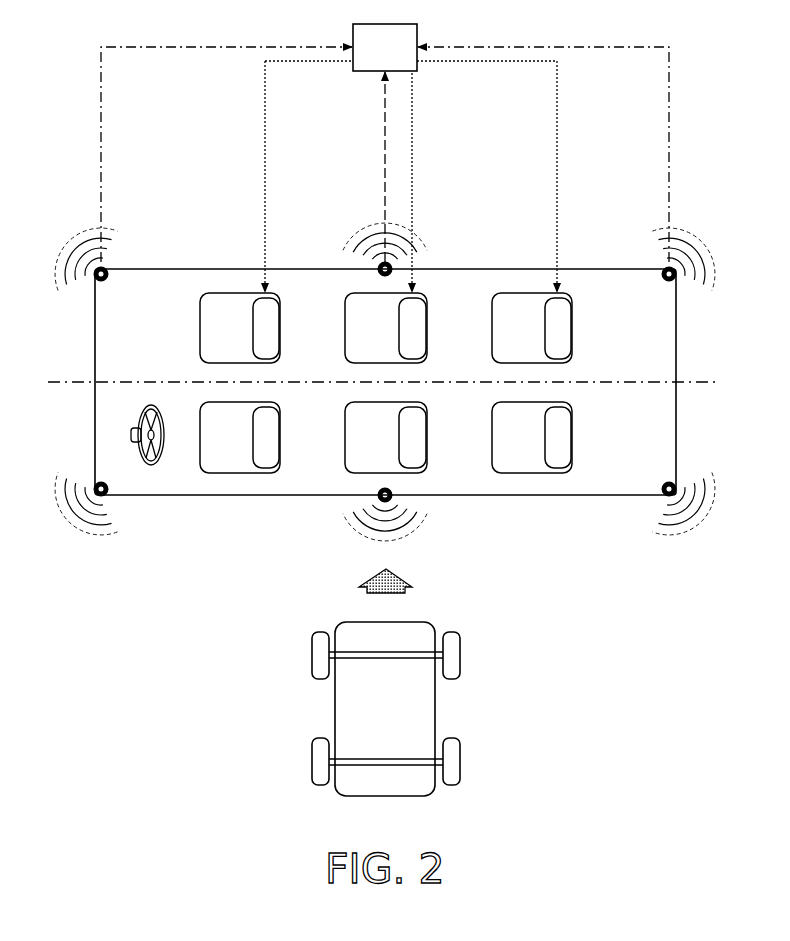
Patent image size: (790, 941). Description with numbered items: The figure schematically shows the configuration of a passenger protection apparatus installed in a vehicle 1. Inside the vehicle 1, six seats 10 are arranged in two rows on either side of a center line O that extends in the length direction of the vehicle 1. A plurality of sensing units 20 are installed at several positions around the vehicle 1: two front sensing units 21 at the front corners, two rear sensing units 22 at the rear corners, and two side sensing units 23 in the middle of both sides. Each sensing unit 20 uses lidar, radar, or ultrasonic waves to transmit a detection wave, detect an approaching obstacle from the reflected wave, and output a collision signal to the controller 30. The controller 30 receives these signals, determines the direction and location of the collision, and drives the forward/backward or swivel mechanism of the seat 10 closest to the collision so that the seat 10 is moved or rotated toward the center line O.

The vehicle 1 is at (87, 355).
The seat 10 is at (565, 333).
The sensing unit 20 is at (681, 612).
The front sensing unit 21 is at (109, 275).
The rear sensing unit 22 is at (661, 275).
The side sensing unit 23 is at (392, 271).
The controller 30 is at (398, 59).
The center line O is at (394, 383).